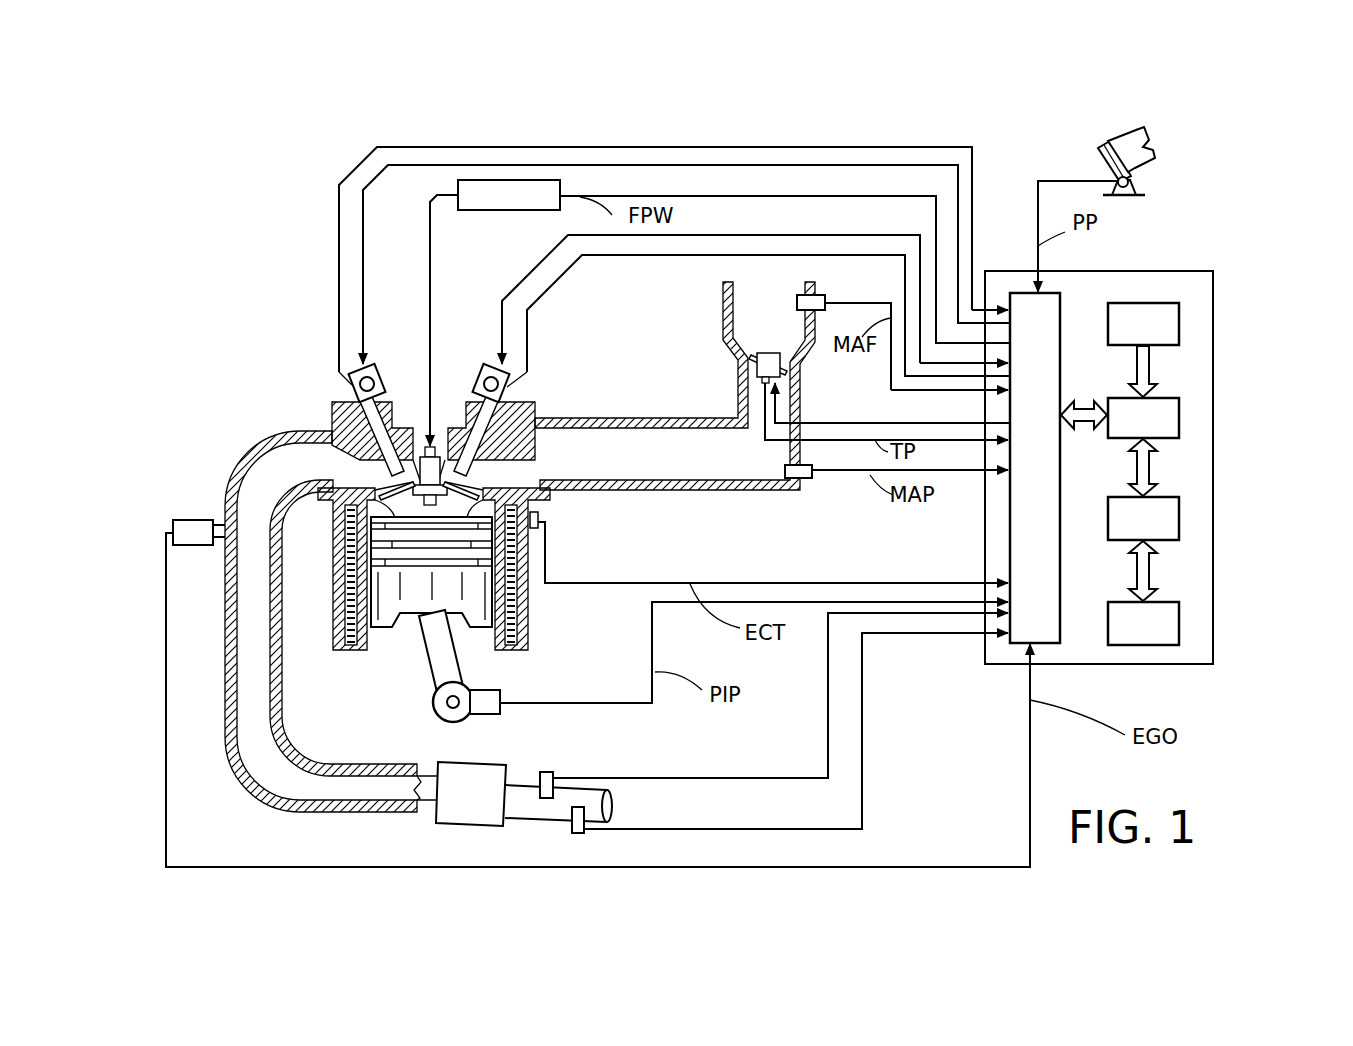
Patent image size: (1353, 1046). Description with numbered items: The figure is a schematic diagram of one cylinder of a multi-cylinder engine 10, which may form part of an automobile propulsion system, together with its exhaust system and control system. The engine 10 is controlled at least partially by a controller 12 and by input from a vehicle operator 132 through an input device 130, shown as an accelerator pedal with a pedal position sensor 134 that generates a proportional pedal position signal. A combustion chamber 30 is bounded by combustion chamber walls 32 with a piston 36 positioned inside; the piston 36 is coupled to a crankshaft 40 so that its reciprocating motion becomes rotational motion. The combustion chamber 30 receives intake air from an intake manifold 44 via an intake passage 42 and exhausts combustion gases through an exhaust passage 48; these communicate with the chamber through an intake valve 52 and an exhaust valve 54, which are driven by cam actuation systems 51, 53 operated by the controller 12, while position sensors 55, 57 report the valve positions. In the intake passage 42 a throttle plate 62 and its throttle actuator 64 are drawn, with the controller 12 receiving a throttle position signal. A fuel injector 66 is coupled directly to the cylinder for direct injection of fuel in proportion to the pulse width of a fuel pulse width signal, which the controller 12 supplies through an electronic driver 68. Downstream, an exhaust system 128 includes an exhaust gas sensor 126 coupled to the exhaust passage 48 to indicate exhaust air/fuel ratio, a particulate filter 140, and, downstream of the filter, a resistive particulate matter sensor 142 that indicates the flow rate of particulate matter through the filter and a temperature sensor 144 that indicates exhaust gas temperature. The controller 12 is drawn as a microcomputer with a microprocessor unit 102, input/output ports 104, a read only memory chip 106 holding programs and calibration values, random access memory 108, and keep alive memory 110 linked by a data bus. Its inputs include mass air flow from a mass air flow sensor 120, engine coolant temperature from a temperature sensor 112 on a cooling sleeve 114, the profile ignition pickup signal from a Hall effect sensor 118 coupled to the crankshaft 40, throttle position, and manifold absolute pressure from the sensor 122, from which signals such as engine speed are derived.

The engine 10 is at (262, 350).
The controller 12 is at (1205, 270).
The combustion chamber 30 is at (403, 503).
The combustion chamber walls 32 is at (375, 642).
The piston 36 is at (415, 600).
The crankshaft 40 is at (440, 728).
The intake passage 42 is at (769, 393).
The intake manifold 44 is at (675, 386).
The exhaust passage 48 is at (331, 621).
The cam actuation system 51 is at (490, 368).
The intake valve 52 is at (480, 472).
The cam actuation system 53 is at (372, 368).
The exhaust valve 54 is at (357, 440).
The position sensor 55 is at (507, 387).
The position sensor 57 is at (352, 385).
The throttle plate 62 is at (778, 368).
The throttle actuator 64 is at (756, 364).
The fuel injector 66 is at (437, 440).
The electronic driver 68 is at (540, 210).
The microprocessor unit 102 is at (1180, 420).
The input/output ports 104 is at (1062, 300).
The read only memory chip 106 is at (1180, 318).
The random access memory 108 is at (1180, 520).
The keep alive memory 110 is at (1180, 623).
The temperature sensor 112 is at (540, 530).
The cooling sleeve 114 is at (515, 605).
The Hall effect sensor 118 is at (492, 718).
The mass air flow sensor 120 is at (822, 295).
The sensor 122 is at (808, 480).
The exhaust gas sensor 126 is at (173, 522).
The exhaust system 128 is at (262, 806).
The input device 130 is at (1110, 163).
The vehicle operator 132 is at (1153, 142).
The pedal position sensor 134 is at (1140, 182).
The particulate filter 140 is at (524, 794).
The particulate matter sensor 142 is at (553, 775).
The temperature sensor 144 is at (572, 832).